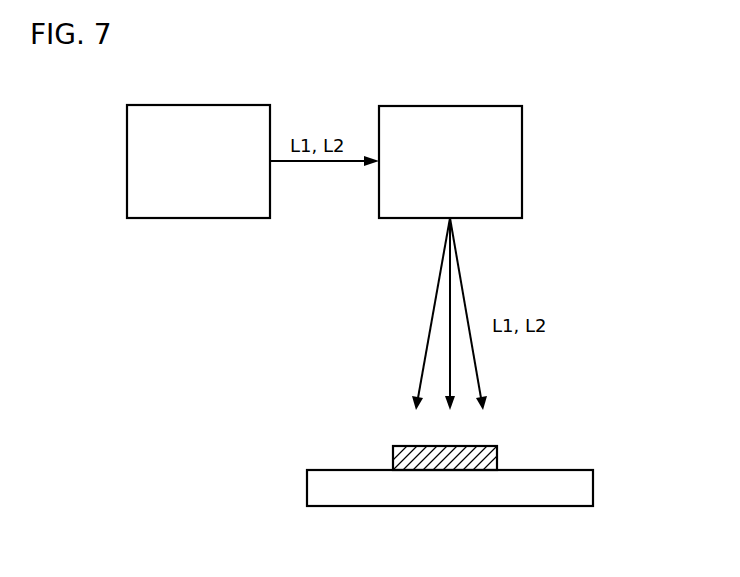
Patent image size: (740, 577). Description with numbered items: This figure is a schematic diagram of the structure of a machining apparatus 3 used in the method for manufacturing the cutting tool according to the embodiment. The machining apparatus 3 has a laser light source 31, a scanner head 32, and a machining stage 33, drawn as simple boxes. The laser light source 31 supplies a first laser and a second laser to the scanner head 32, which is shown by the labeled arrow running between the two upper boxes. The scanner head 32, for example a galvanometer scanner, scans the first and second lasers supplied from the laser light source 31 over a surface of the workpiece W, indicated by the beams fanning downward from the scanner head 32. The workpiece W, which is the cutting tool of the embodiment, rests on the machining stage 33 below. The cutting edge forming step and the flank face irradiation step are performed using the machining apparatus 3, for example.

The machining apparatus 3 is at (270, 362).
The laser light source 31 is at (197, 208).
The scanner head 32 is at (395, 193).
The machining stage 33 is at (340, 488).
The workpiece W is at (485, 459).